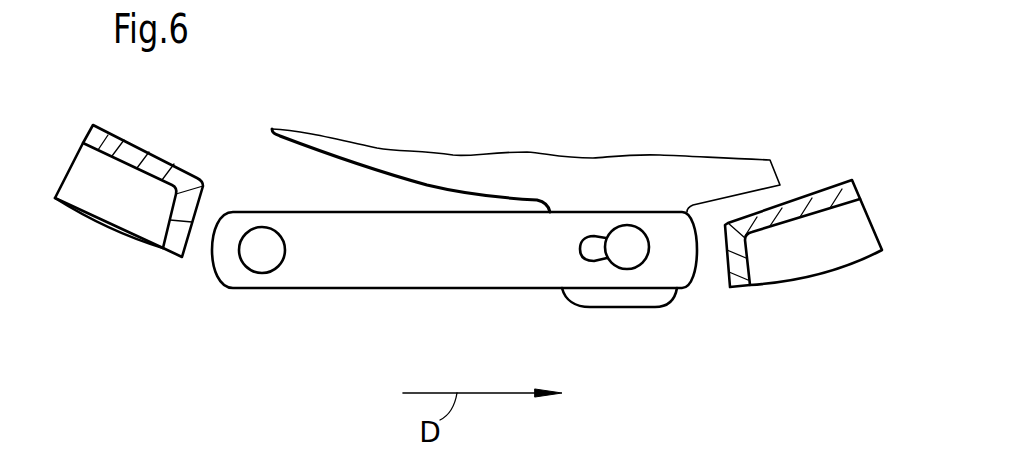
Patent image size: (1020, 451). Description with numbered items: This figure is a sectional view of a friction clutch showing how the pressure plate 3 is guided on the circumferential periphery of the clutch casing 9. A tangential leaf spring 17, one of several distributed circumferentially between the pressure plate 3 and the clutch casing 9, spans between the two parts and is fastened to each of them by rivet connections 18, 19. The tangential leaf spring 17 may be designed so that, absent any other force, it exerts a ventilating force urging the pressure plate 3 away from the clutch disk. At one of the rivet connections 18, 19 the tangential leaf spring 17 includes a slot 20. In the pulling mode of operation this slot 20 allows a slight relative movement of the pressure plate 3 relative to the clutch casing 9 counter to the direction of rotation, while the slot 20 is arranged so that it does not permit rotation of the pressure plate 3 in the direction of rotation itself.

The pressure plate 3 is at (630, 173).
The clutch casing 9 is at (170, 248).
The tangential leaf spring 17 is at (403, 273).
The rivet connection 18 is at (262, 263).
The rivet connection 19 is at (633, 262).
The slot 20 is at (593, 252).